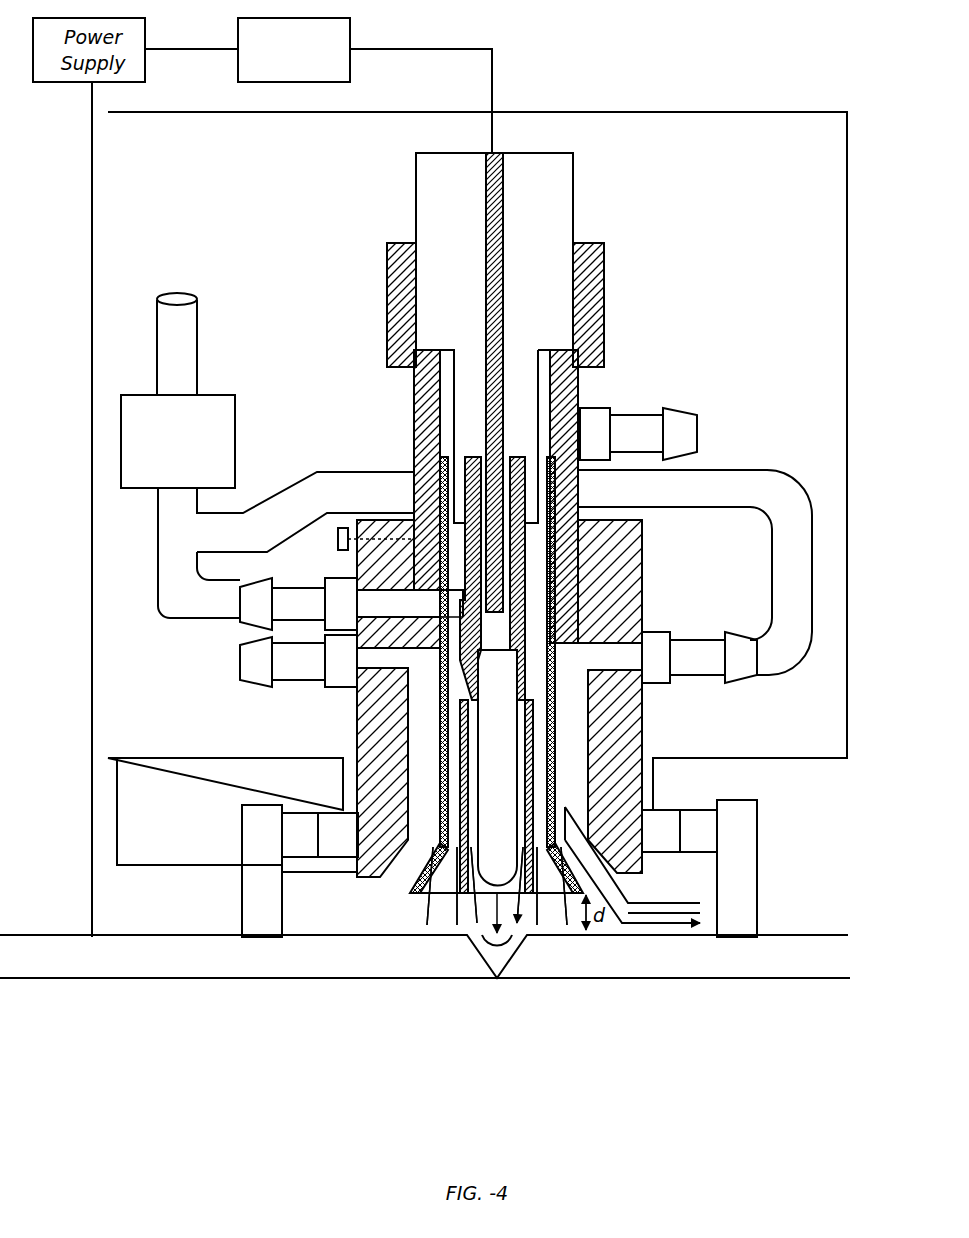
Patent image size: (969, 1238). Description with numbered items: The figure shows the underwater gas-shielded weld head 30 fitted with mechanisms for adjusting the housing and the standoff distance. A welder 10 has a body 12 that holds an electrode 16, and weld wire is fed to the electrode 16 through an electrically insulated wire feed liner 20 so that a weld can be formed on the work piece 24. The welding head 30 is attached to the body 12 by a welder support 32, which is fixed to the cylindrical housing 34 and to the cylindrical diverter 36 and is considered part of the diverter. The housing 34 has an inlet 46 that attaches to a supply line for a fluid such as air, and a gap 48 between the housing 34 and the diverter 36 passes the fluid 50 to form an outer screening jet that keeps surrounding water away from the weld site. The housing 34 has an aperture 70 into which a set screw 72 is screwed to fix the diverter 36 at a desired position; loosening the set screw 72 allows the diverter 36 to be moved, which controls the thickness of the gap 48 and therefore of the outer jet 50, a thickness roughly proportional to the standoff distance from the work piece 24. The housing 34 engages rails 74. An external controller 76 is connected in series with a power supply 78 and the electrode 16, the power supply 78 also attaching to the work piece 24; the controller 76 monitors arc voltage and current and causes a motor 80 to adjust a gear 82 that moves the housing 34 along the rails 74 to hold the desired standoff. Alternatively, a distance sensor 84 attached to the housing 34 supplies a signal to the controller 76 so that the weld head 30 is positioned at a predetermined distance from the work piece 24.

The welder 10 is at (404, 184).
The body 12 is at (578, 175).
The electrode 16 is at (500, 772).
The wire feed liner 20 is at (506, 224).
The work piece 24 is at (782, 932).
The welding head 30 is at (370, 294).
The welder support 32 is at (413, 404).
The housing 34 is at (645, 555).
The diverter 36 is at (439, 452).
The inlet 46 is at (638, 406).
The gap 48 is at (357, 882).
The fluid 50 is at (627, 893).
The aperture 70 is at (338, 540).
The set screw 72 is at (357, 562).
The rails 74 is at (262, 804).
The external controller 76 is at (350, 40).
The power supply 78 is at (145, 40).
The motor 80 is at (333, 812).
The gear 82 is at (285, 837).
The distance sensor 84 is at (236, 415).